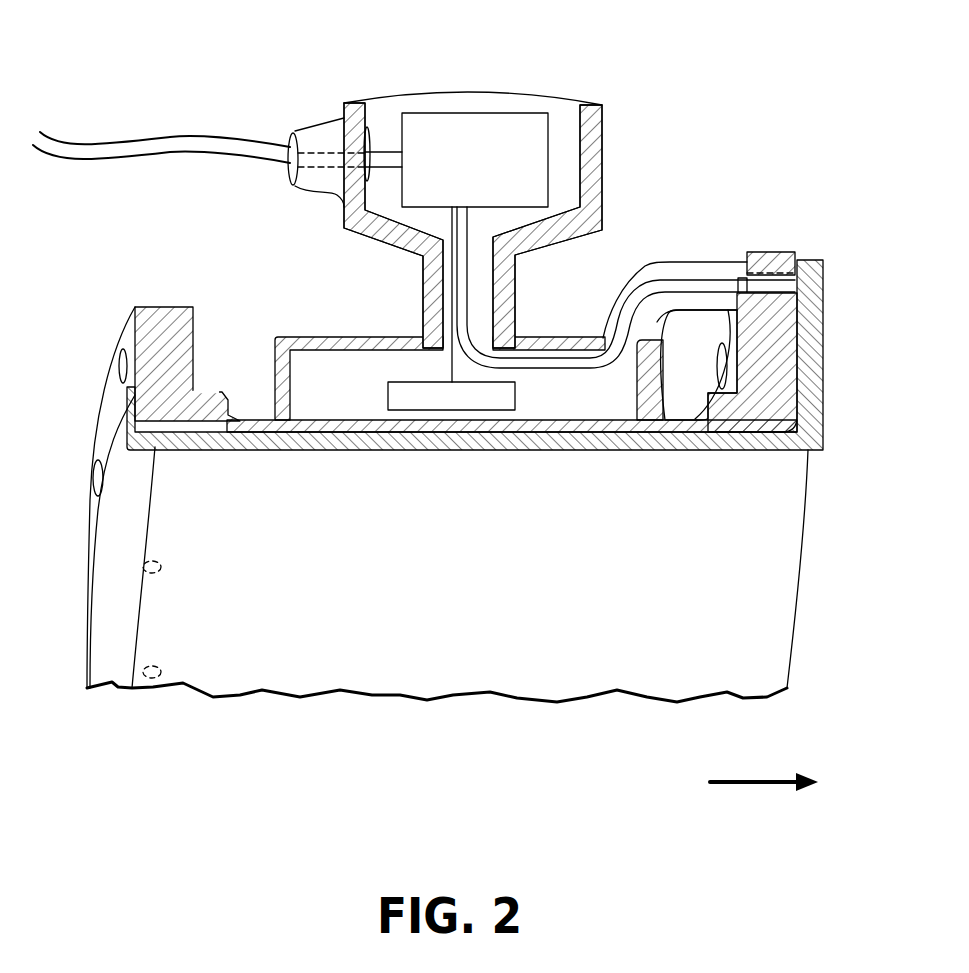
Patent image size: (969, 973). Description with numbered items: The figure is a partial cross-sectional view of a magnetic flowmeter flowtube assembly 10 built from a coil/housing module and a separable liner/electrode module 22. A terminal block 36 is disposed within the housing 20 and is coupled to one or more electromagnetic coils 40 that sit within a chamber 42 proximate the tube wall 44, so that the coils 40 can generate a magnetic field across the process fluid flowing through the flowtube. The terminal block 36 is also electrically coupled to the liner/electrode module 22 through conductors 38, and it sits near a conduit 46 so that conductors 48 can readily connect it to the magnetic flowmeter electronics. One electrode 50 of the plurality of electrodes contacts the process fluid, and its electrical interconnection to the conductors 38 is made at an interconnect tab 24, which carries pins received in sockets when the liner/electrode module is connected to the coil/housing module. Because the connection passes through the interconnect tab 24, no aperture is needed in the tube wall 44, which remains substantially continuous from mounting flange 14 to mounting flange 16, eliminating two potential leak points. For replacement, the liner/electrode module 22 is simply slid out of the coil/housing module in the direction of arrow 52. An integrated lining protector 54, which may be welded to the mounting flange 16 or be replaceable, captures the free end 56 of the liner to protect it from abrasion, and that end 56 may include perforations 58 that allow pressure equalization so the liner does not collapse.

The sensor assembly 10 is at (751, 107).
The mounting flange 14 is at (778, 252).
The mounting flange 16 is at (157, 307).
The housing 20 is at (603, 152).
The liner/electrode module 22 is at (823, 352).
The interconnect tab 24 is at (823, 278).
The terminal block 36 is at (535, 113).
The conductors 38 is at (563, 372).
The electromagnetic coils 40 is at (388, 402).
The chamber 42 is at (369, 350).
The tube wall 44 is at (547, 430).
The conduit 46 is at (310, 120).
The conductors 48 is at (225, 156).
The electrode 50 is at (440, 626).
The arrow 52 is at (757, 783).
The lining protector 54 is at (83, 647).
The free end 56 is at (148, 435).
The perforations 58 is at (153, 680).